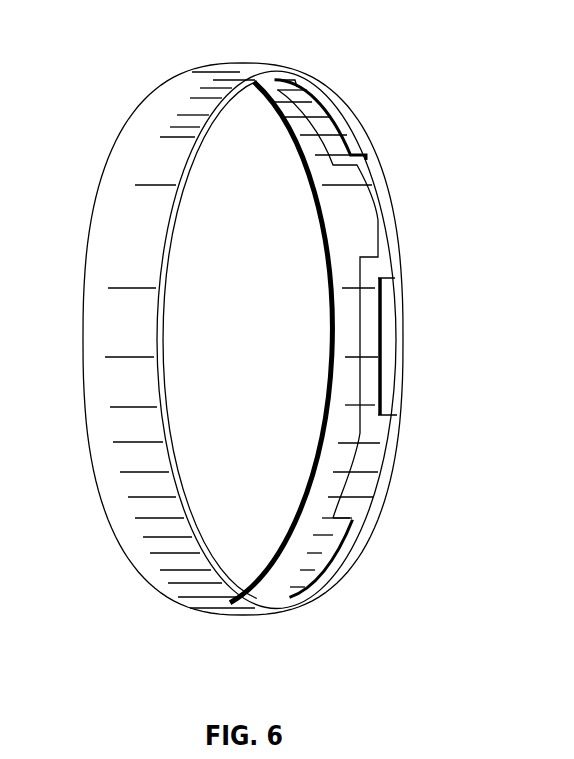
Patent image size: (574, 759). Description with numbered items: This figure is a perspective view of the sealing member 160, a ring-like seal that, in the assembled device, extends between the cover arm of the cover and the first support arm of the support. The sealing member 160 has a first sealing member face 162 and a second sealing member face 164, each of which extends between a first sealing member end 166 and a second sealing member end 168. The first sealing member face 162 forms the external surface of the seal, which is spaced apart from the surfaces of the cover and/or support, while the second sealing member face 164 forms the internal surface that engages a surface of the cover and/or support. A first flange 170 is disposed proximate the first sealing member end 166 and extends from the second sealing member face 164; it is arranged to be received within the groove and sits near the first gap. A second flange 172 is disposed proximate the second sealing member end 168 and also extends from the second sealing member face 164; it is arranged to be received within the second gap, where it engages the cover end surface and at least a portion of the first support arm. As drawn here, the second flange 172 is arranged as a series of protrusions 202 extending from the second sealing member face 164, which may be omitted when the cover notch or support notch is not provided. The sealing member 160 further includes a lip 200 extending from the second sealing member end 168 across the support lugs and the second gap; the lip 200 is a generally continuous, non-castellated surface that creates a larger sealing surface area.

The sealing member 160 is at (356, 62).
The first sealing member face 162 is at (163, 112).
The second sealing member face 164 is at (328, 205).
The first sealing member end 166 is at (117, 150).
The second sealing member end 168 is at (205, 127).
The first flange 170 is at (325, 331).
The second flange 172 is at (380, 307).
The lip 200 is at (390, 370).
The series of protrusions 202 is at (357, 443).